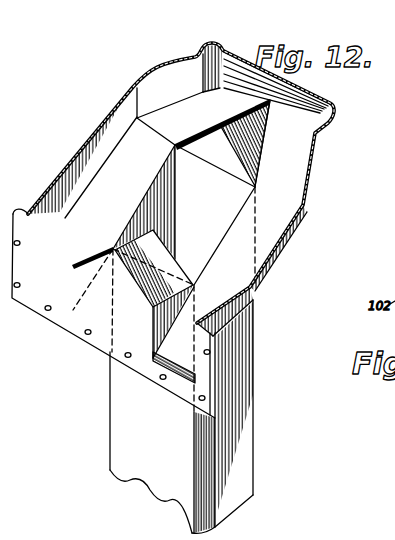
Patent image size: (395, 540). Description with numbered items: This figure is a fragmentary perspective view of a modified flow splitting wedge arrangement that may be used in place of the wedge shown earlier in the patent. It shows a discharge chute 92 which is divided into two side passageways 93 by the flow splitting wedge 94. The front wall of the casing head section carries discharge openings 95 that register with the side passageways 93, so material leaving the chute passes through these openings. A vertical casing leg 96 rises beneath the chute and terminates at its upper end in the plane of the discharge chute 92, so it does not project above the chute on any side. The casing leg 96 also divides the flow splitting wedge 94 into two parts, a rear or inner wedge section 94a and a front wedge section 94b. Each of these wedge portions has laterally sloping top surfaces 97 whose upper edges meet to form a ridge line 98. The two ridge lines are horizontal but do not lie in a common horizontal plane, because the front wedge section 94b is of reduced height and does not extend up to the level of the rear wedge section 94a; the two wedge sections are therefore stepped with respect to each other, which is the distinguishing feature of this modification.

The discharge chute 92 is at (310, 122).
The side passageways 93 is at (140, 169).
The flow splitting wedge 94 is at (148, 338).
The rear wedge section 94a is at (255, 168).
The front wedge section 94b is at (155, 310).
The discharge openings 95 is at (36, 283).
The vertical casing leg 96 is at (253, 422).
The laterally sloping top surfaces 97 is at (222, 127).
The ridge line 98 is at (250, 111).